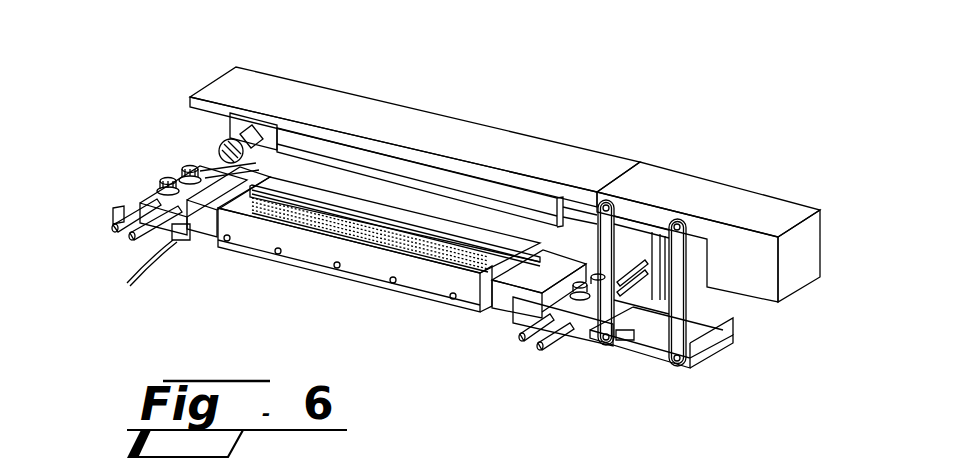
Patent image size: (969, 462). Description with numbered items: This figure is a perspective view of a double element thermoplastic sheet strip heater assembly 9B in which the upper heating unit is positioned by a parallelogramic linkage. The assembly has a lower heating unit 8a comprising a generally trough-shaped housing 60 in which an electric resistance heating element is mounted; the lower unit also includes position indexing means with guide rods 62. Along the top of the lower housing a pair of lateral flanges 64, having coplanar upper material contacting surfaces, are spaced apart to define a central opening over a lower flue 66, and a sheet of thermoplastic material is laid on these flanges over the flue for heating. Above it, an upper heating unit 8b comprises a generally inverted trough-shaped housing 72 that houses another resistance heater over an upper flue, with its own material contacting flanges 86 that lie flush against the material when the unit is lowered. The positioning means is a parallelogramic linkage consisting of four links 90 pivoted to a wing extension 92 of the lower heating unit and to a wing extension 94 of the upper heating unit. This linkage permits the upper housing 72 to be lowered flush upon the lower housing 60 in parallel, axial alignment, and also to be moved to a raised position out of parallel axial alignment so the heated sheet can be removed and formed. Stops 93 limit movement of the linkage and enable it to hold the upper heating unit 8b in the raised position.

The lower heating unit 8a is at (170, 157).
The upper heating unit 8b is at (195, 77).
The double element strip heater assembly 9B is at (545, 94).
The trough-shaped housing 60 is at (319, 262).
The guide rods 62 is at (143, 225).
The lateral flanges 64 is at (281, 220).
The lower flue 66 is at (476, 243).
The inverted trough-shaped housing 72 is at (418, 177).
The upper flanges 86 is at (379, 183).
The links 90 is at (657, 268).
The wing extension of the lower heating unit 92 is at (710, 342).
The stops 93 is at (620, 342).
The wing extension of the upper heating unit 94 is at (724, 198).